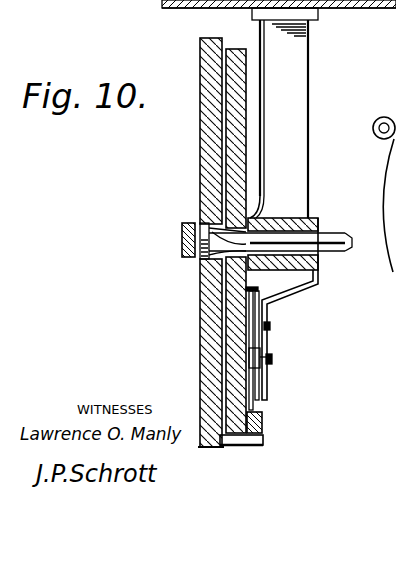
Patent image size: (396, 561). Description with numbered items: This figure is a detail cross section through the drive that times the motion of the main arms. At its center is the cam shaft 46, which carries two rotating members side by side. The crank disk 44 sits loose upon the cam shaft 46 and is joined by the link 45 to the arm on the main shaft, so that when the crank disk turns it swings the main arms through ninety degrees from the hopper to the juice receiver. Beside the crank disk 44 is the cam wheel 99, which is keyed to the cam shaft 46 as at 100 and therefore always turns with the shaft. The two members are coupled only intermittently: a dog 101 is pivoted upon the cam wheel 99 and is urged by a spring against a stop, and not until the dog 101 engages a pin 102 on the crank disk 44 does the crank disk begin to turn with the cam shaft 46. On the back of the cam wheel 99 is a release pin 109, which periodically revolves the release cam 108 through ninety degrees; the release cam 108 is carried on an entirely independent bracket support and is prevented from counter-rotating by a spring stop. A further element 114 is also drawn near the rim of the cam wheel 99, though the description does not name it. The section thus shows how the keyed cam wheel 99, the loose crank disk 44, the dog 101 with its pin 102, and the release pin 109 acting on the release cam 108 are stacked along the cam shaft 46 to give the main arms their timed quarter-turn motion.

The crank disk 44 is at (203, 104).
The cam wheel 99 is at (250, 109).
The link 45 is at (182, 228).
The key 100 is at (262, 218).
The cam shaft 46 is at (341, 252).
The release pin 109 is at (281, 296).
The release cam 108 is at (270, 327).
The dog 101 is at (259, 423).
The pin 102 is at (259, 444).
The roller 114 is at (379, 120).